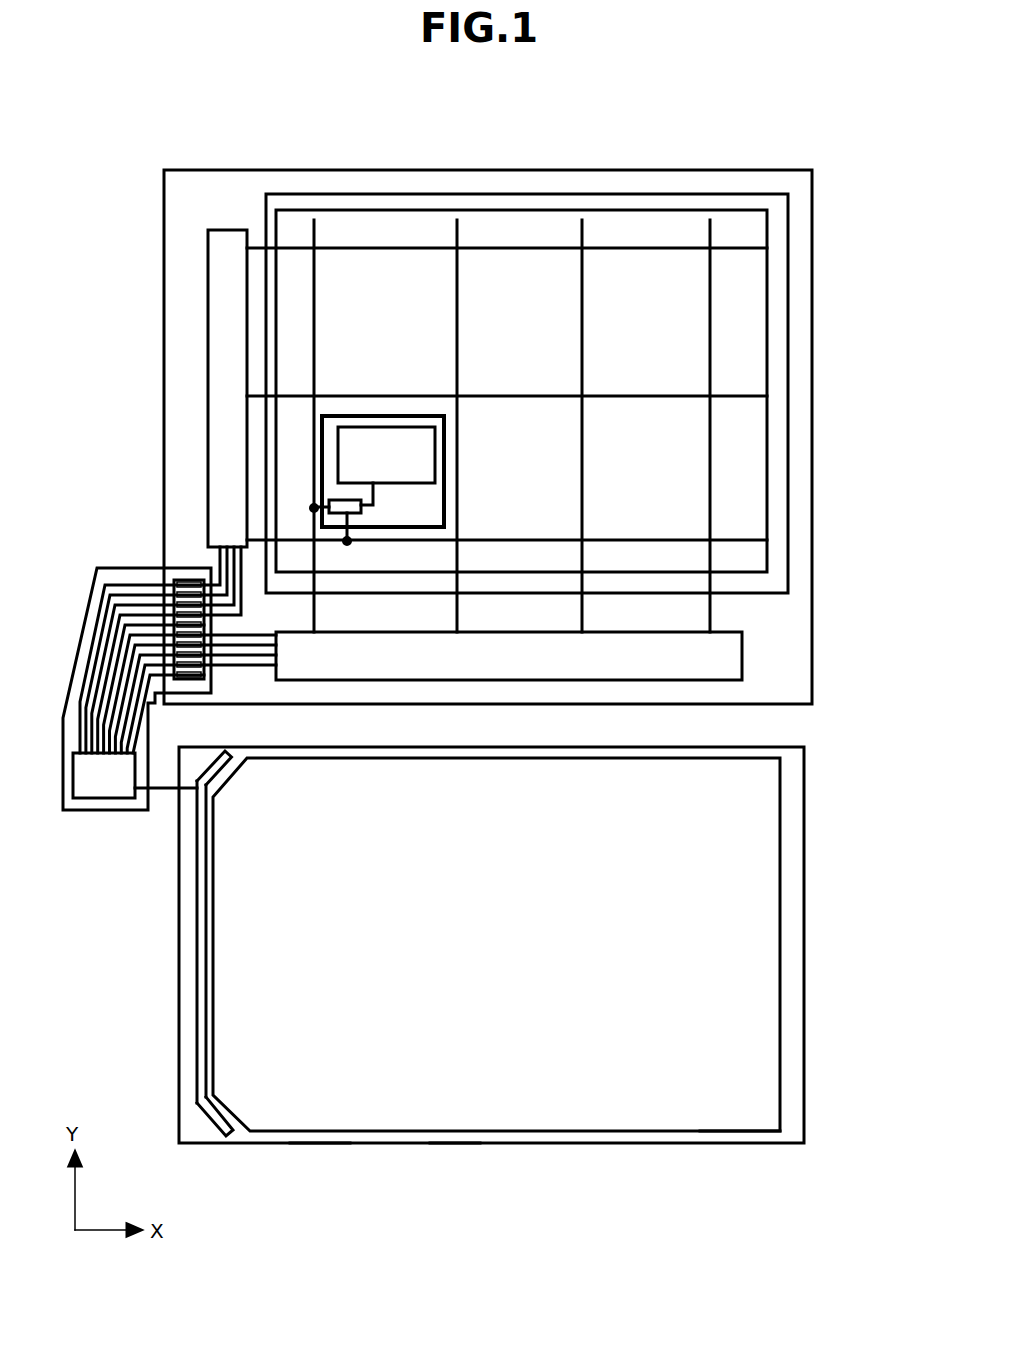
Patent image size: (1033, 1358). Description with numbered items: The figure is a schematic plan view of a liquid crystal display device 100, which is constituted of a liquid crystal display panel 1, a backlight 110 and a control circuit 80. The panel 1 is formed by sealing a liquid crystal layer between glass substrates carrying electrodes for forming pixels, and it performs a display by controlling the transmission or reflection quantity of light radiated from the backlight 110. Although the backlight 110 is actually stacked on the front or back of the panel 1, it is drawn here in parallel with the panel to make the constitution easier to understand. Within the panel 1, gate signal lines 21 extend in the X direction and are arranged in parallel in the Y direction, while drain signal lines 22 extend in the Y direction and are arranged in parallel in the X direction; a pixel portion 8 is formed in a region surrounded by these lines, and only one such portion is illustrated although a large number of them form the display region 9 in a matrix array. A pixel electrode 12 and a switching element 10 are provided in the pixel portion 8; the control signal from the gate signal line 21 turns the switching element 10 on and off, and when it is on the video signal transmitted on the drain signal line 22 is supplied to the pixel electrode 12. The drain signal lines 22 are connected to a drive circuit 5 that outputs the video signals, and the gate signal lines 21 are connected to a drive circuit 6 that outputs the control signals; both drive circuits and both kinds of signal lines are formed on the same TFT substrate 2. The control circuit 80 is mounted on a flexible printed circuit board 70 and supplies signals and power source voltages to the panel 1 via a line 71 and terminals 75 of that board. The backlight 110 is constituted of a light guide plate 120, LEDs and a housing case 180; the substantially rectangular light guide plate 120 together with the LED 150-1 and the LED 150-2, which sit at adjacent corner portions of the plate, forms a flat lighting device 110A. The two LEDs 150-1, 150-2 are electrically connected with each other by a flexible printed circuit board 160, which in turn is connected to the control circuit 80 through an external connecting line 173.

The liquid crystal display panel 1 is at (503, 168).
The TFT substrate 2 is at (273, 182).
The display region 9 is at (628, 222).
The drive circuit 6 is at (200, 377).
The drain signal line 22 is at (318, 340).
The gate signal line 21 is at (509, 394).
The pixel portion 8 is at (446, 437).
The pixel electrode 12 is at (396, 458).
The switching element 10 is at (363, 507).
The drive circuit 5 is at (743, 650).
The flexible printed circuit board 70 is at (126, 575).
The line 71 is at (100, 582).
The terminals 75 is at (184, 586).
The control circuit 80 is at (97, 797).
The external connecting line 173 is at (155, 797).
The backlight 110 is at (623, 1137).
The liquid crystal display device 100 is at (452, 1172).
The housing case 180 is at (318, 1144).
The flat lighting device 110A is at (760, 965).
The light guide plate 120 is at (735, 1112).
The flexible printed circuit board 160 is at (196, 960).
The LED 150-2 is at (203, 758).
The LED 150-1 is at (232, 1143).